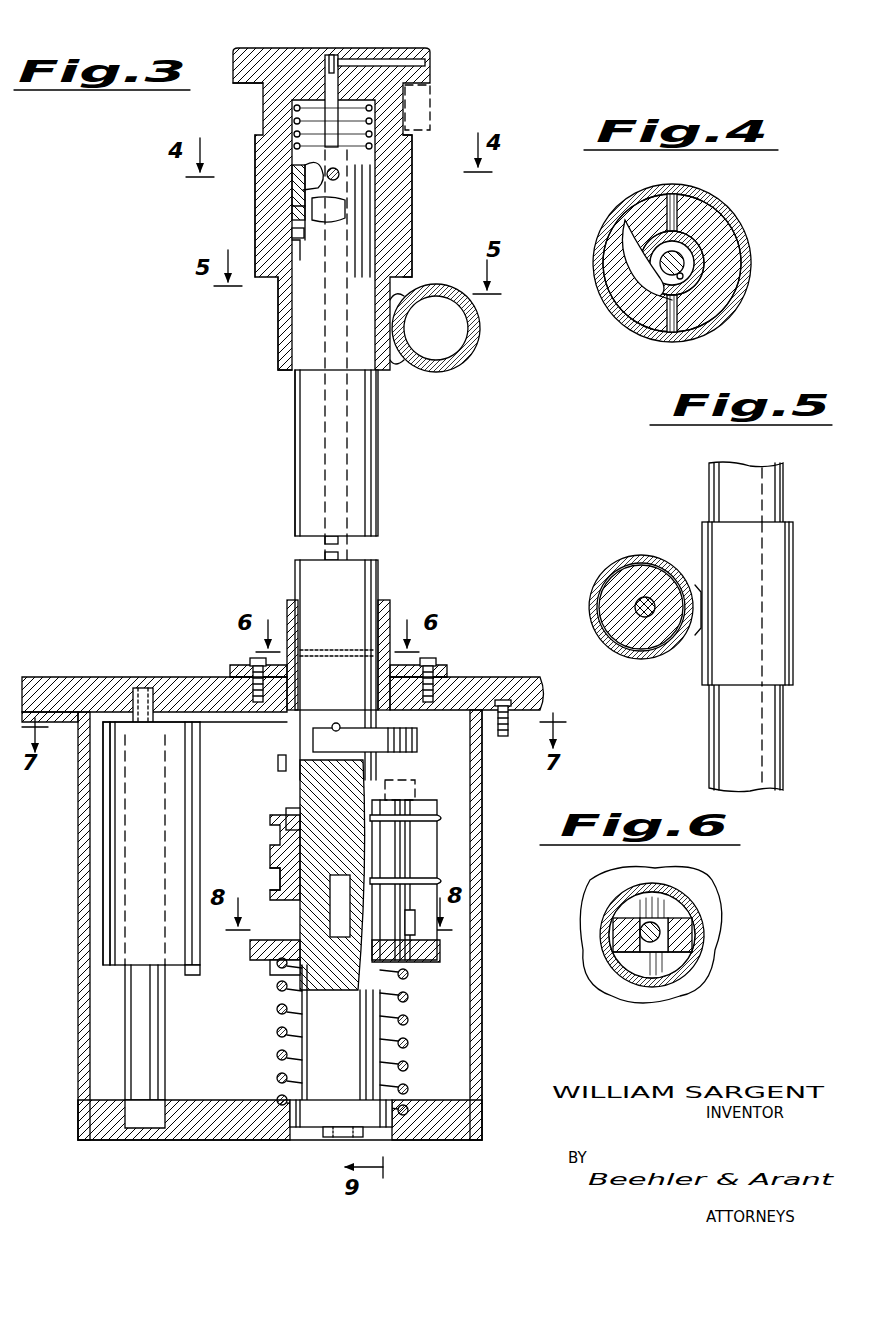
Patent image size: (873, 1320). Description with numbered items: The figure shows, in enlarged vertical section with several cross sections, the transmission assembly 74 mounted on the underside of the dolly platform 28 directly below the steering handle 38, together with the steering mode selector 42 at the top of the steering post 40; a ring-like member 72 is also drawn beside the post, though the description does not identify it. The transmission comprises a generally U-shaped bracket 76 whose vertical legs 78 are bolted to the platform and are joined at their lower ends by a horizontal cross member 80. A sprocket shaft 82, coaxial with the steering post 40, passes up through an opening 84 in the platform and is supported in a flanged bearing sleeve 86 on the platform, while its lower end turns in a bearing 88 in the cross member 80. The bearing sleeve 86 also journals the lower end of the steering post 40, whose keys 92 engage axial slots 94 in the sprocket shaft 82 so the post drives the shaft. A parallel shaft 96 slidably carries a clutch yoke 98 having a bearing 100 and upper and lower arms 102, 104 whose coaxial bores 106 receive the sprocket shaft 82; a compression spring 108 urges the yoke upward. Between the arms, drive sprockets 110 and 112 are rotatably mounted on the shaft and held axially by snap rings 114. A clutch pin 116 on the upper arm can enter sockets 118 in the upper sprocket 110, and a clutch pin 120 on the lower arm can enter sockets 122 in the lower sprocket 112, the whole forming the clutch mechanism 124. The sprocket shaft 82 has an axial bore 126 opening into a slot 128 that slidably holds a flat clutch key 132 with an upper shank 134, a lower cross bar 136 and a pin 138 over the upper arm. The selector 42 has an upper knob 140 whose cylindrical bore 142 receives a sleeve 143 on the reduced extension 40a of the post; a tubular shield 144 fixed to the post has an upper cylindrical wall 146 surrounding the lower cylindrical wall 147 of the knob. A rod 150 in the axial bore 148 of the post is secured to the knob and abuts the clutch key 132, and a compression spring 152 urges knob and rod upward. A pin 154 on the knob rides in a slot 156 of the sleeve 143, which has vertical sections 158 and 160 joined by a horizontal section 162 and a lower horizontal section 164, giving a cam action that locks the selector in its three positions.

In FIG. 3, the dolly platform 28 is at (66, 678).
In FIG. 3, the steering handle 38 is at (294, 449).
In FIG. 3, the steering post 40 is at (296, 488).
In FIG. 5, the steering post 40 is at (632, 578).
In FIG. 3, the reduced extension 40a is at (372, 266).
In FIG. 4, the reduced extension 40a is at (694, 252).
In FIG. 3, the steering mode selector 42 is at (412, 58).
In FIG. 3, the ring 72 is at (462, 352).
In FIG. 5, the ring 72 is at (788, 467).
In FIG. 3, the transmission assembly 74 is at (483, 868).
In FIG. 3, the U-shaped bracket 76 is at (90, 1086).
In FIG. 3, the vertical legs 78 is at (80, 950).
In FIG. 3, the horizontal cross member 80 is at (235, 1142).
In FIG. 3, the sprocket shaft 82 is at (329, 1087).
In FIG. 6, the sprocket shaft 82 is at (668, 908).
In FIG. 3, the opening 84 is at (445, 712).
In FIG. 3, the flanged bearing sleeve 86 is at (395, 604).
In FIG. 6, the flanged bearing sleeve 86 is at (690, 906).
In FIG. 3, the bearing 88 is at (328, 1122).
In FIG. 3, the keys 92 is at (247, 652).
In FIG. 6, the keys 92 is at (695, 934).
In FIG. 3, the axial slots 94 is at (232, 668).
In FIG. 6, the axial slots 94 is at (688, 950).
In FIG. 3, the shaft 96 is at (125, 1020).
In FIG. 3, the clutch yoke 98 is at (110, 856).
In FIG. 3, the bearing 100 is at (108, 826).
In FIG. 3, the upper yoke arm 102 is at (215, 738).
In FIG. 3, the lower yoke arm 104 is at (205, 968).
In FIG. 3, the coaxial bores 106 is at (310, 990).
In FIG. 3, the compression spring 108 is at (278, 1085).
In FIG. 3, the upper drive sprocket 110 is at (305, 834).
In FIG. 3, the lower drive sprocket 112 is at (415, 922).
In FIG. 3, the snap rings 114 is at (388, 808).
In FIG. 3, the clutch pin 116 is at (280, 763).
In FIG. 3, the sockets 118 is at (292, 812).
In FIG. 3, the clutch pin 120 is at (280, 962).
In FIG. 3, the sockets 122 is at (420, 948).
In FIG. 3, the clutch mechanism 124 is at (108, 897).
In FIG. 3, the axial bore 126 is at (190, 690).
In FIG. 6, the axial bore 126 is at (672, 958).
In FIG. 3, the slot 128 is at (340, 878).
In FIG. 3, the clutch key 132 is at (330, 788).
In FIG. 3, the upper shank 134 is at (347, 766).
In FIG. 3, the lower cross bar 136 is at (333, 852).
In FIG. 3, the pin 138 is at (375, 738).
In FIG. 3, the upper knob 140 is at (247, 54).
In FIG. 3, the cylindrical bore 142 is at (292, 110).
In FIG. 3, the sleeve 143 is at (383, 255).
In FIG. 4, the sleeve 143 is at (635, 276).
In FIG. 3, the tubular shield 144 is at (293, 318).
In FIG. 3, the upper cylindrical wall 146 is at (262, 222).
In FIG. 4, the upper cylindrical wall 146 is at (716, 208).
In FIG. 3, the lower cylindrical wall 147 is at (398, 186).
In FIG. 4, the lower cylindrical wall 147 is at (726, 284).
In FIG. 3, the axial bore 148 is at (328, 418).
In FIG. 5, the axial bore 148 is at (640, 600).
In FIG. 3, the rod 150 is at (360, 124).
In FIG. 4, the rod 150 is at (666, 278).
In FIG. 5, the rod 150 is at (638, 614).
In FIG. 6, the rod 150 is at (642, 928).
In FIG. 3, the compression spring 152 is at (352, 143).
In FIG. 4, the compression spring 152 is at (688, 263).
In FIG. 3, the pin 154 is at (338, 212).
In FIG. 4, the pin 154 is at (703, 316).
In FIG. 3, the slot 156 is at (340, 178).
In FIG. 4, the slot 156 is at (674, 300).
In FIG. 3, the upper vertical slot section 158 is at (295, 182).
In FIG. 3, the lower vertical slot section 160 is at (290, 233).
In FIG. 3, the horizontal slot section 162 is at (285, 210).
In FIG. 3, the lower horizontal slot section 164 is at (292, 250).